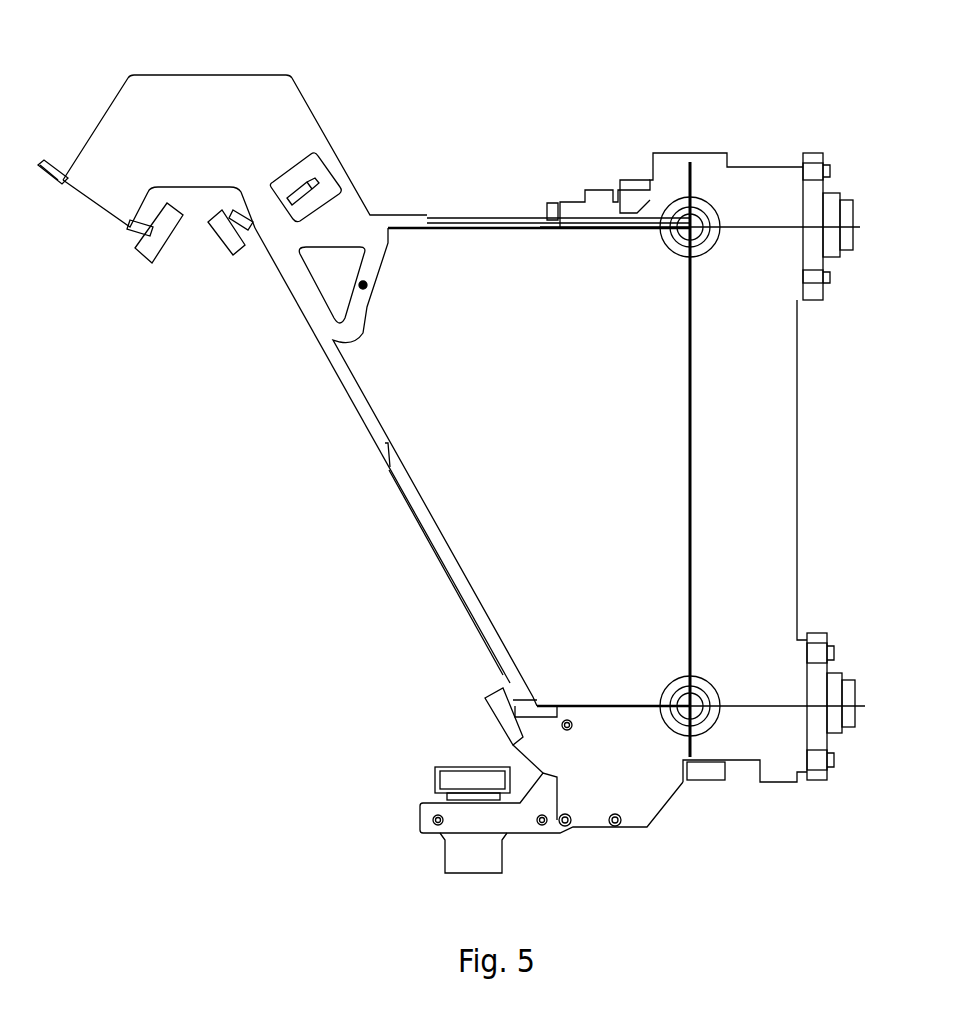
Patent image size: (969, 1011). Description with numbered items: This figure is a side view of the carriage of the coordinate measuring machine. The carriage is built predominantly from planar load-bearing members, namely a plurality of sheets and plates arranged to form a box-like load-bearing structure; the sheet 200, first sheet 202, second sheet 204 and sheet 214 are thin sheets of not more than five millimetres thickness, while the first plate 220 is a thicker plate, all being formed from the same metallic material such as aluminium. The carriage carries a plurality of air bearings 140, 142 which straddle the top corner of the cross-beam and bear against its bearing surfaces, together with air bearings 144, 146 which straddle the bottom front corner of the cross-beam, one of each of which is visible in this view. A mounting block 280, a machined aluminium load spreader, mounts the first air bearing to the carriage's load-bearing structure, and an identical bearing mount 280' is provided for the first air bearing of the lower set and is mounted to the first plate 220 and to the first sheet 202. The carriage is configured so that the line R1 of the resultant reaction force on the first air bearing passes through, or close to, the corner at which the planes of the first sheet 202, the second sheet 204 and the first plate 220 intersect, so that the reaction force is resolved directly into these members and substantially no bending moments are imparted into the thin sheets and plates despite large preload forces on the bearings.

The air bearing 140 is at (148, 252).
The air bearing 142 is at (230, 250).
The air bearing 144 is at (485, 698).
The air bearing 146 is at (435, 767).
The sheet 200 is at (555, 428).
The first sheet 202 is at (692, 360).
The second sheet 204 is at (527, 220).
The sheet 214 is at (385, 443).
The first plate 220 is at (758, 468).
The mounting block 280 is at (591, 137).
The bearing mount 280' is at (762, 774).
The line of resultant reaction force R1 is at (690, 227).